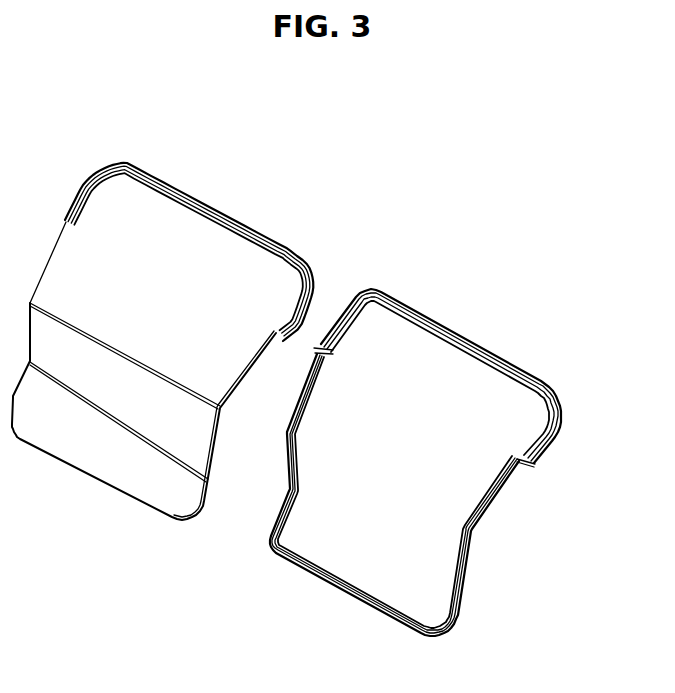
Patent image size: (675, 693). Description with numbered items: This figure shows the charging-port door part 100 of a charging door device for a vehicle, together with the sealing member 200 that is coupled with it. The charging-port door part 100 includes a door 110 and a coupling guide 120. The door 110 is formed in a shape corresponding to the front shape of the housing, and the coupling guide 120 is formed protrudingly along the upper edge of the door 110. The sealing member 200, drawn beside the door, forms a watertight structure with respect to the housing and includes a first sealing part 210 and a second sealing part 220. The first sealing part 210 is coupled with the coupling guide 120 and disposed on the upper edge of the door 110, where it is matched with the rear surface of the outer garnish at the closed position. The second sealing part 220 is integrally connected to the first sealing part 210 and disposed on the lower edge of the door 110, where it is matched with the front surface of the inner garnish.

The charging-port door part 100 is at (272, 222).
The door 110 is at (273, 272).
The coupling guide 120 is at (313, 273).
The sealing member 200 is at (538, 350).
The first sealing part 210 is at (463, 332).
The second sealing part 220 is at (453, 618).